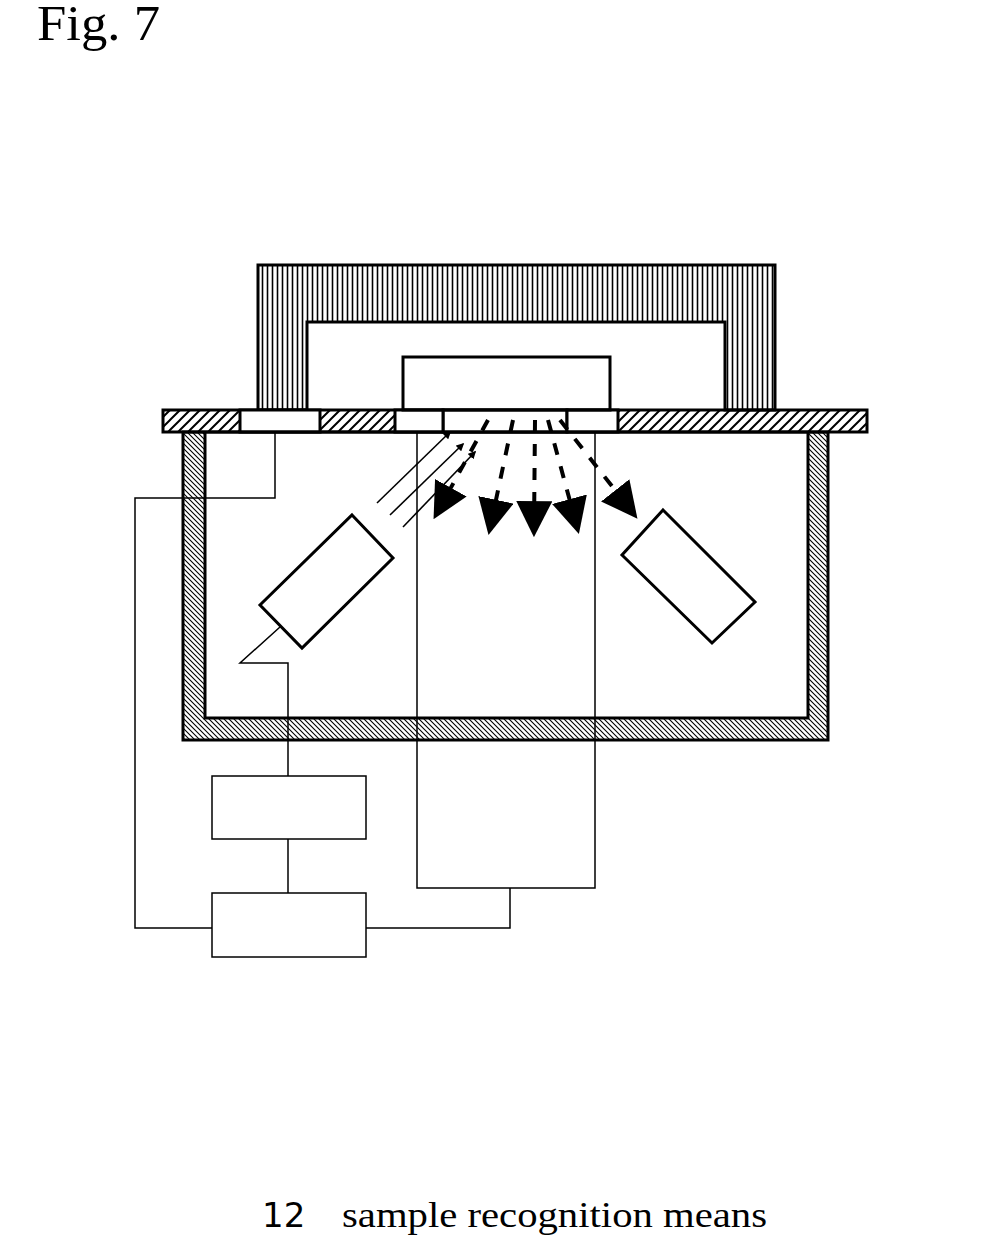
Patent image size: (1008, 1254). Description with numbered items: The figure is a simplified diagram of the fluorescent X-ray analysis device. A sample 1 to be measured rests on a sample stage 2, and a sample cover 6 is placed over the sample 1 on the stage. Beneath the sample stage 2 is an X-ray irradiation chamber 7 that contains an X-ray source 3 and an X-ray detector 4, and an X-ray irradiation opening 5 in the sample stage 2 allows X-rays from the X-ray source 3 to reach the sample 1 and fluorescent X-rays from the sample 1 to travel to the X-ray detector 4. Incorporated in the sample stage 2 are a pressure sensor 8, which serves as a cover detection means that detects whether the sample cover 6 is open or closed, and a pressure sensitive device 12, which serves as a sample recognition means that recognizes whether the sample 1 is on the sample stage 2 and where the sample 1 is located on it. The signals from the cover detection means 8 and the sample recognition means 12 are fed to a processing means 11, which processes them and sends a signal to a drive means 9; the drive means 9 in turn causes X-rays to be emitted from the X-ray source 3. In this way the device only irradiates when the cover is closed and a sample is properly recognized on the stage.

The sample 1 is at (585, 370).
The sample stage 2 is at (662, 407).
The X-ray source 3 is at (328, 585).
The X-ray detector 4 is at (700, 585).
The X-ray irradiation opening 5 is at (495, 423).
The sample cover 6 is at (405, 295).
The X-ray irradiation chamber 7 is at (700, 687).
The pressure sensor 8 is at (263, 422).
The drive means 9 is at (263, 813).
The processing means 11 is at (275, 927).
The pressure sensitive device 12 is at (420, 420).